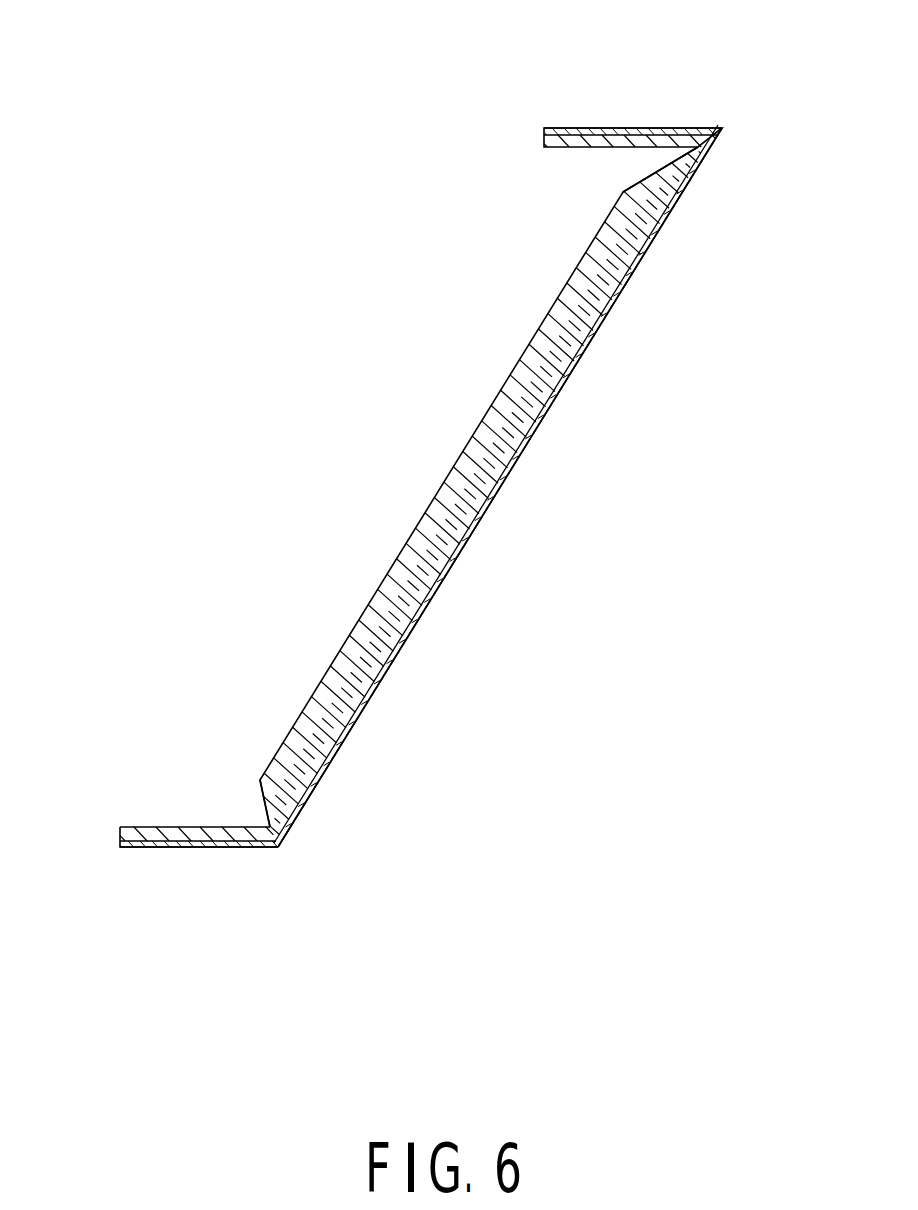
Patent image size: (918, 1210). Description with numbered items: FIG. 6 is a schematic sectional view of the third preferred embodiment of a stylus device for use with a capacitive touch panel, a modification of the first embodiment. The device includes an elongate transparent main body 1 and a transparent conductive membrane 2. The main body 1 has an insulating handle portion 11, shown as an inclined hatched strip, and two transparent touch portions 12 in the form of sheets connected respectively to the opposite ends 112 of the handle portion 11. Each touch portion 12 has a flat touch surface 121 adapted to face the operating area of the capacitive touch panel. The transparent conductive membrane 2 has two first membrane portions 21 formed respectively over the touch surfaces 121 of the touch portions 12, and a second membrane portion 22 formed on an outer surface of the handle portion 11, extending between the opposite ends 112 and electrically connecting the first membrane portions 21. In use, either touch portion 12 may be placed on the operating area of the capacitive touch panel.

The main body 1 is at (508, 381).
The handle portion 11 is at (580, 308).
The opposite ends 112 is at (703, 143).
The touch portion 12 is at (665, 133).
The touch surface 121 is at (596, 130).
The transparent conductive membrane 2 is at (569, 378).
The first membrane portion 21 is at (697, 128).
The second membrane portion 22 is at (533, 428).